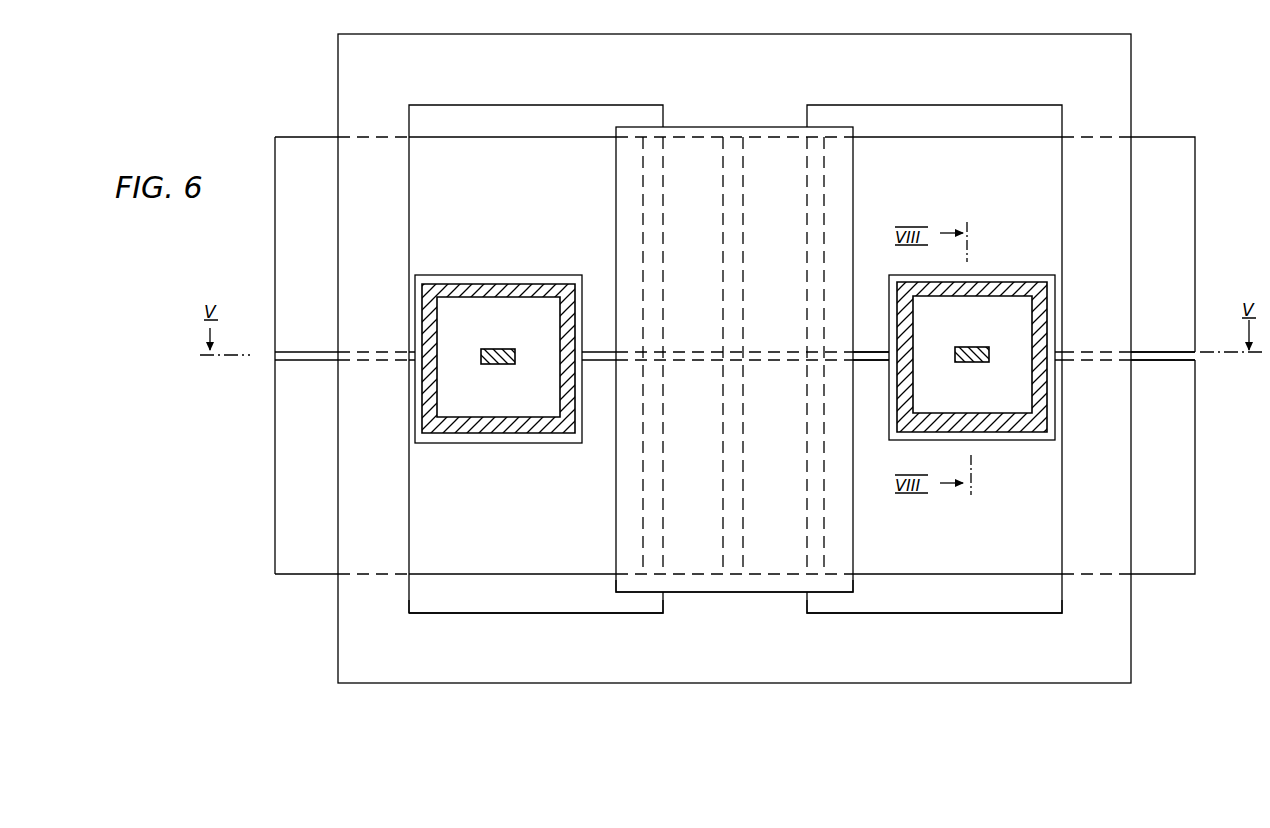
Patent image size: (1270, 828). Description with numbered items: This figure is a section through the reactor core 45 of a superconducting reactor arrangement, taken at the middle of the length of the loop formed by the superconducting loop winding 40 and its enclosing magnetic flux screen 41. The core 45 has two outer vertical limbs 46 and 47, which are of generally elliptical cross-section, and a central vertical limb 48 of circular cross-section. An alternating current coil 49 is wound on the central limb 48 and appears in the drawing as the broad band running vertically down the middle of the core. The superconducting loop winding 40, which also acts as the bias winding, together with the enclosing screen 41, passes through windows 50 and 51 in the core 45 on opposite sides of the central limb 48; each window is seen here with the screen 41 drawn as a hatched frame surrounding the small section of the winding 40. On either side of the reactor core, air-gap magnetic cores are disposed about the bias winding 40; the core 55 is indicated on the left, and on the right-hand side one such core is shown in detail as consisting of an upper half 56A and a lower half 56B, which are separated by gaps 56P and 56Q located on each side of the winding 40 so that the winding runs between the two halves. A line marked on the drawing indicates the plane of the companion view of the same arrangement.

The superconducting loop winding 40 is at (491, 348).
The enclosing magnetic flux screen 41 is at (470, 288).
The reactor core 45 is at (882, 23).
The outer vertical limb 46 is at (340, 111).
The outer vertical limb 47 is at (1115, 115).
The central vertical limb 48 is at (751, 118).
The alternating current coil 49 is at (733, 580).
The window 50 is at (556, 612).
The window 51 is at (1014, 612).
The air-gap magnetic core 55 is at (260, 278).
The upper half 56A is at (1177, 157).
The lower half 56B is at (1182, 477).
The gap 56P is at (863, 353).
The gap 56Q is at (1177, 360).